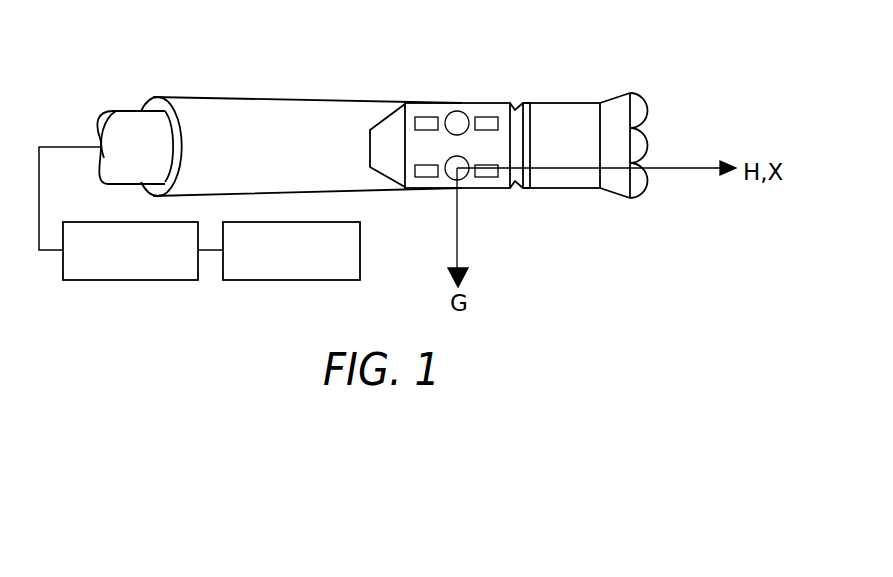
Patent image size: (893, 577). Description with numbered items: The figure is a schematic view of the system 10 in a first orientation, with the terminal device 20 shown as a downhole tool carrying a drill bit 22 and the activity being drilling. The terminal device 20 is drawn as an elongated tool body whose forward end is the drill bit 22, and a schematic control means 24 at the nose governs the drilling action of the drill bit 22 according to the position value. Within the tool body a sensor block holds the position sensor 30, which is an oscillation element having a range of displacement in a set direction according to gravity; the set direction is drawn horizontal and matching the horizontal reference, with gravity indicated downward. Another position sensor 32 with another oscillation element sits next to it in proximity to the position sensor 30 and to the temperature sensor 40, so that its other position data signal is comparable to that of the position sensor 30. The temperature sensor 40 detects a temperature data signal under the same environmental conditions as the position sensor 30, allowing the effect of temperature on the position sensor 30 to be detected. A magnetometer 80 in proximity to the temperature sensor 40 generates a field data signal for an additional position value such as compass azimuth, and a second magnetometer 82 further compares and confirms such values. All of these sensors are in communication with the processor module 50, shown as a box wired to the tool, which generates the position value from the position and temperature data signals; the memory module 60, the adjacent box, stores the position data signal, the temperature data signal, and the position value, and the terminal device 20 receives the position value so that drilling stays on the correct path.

The system 10 is at (602, 77).
The terminal device 20 is at (557, 190).
The drill bit 22 is at (652, 105).
The control means 24 is at (373, 143).
The position sensor 30 is at (462, 178).
The another position sensor 32 is at (458, 112).
The temperature sensor 40 is at (435, 176).
The processor module 50 is at (146, 263).
The memory module 60 is at (308, 263).
The magnetometer 80 is at (432, 118).
The magnetometer 82 is at (492, 118).